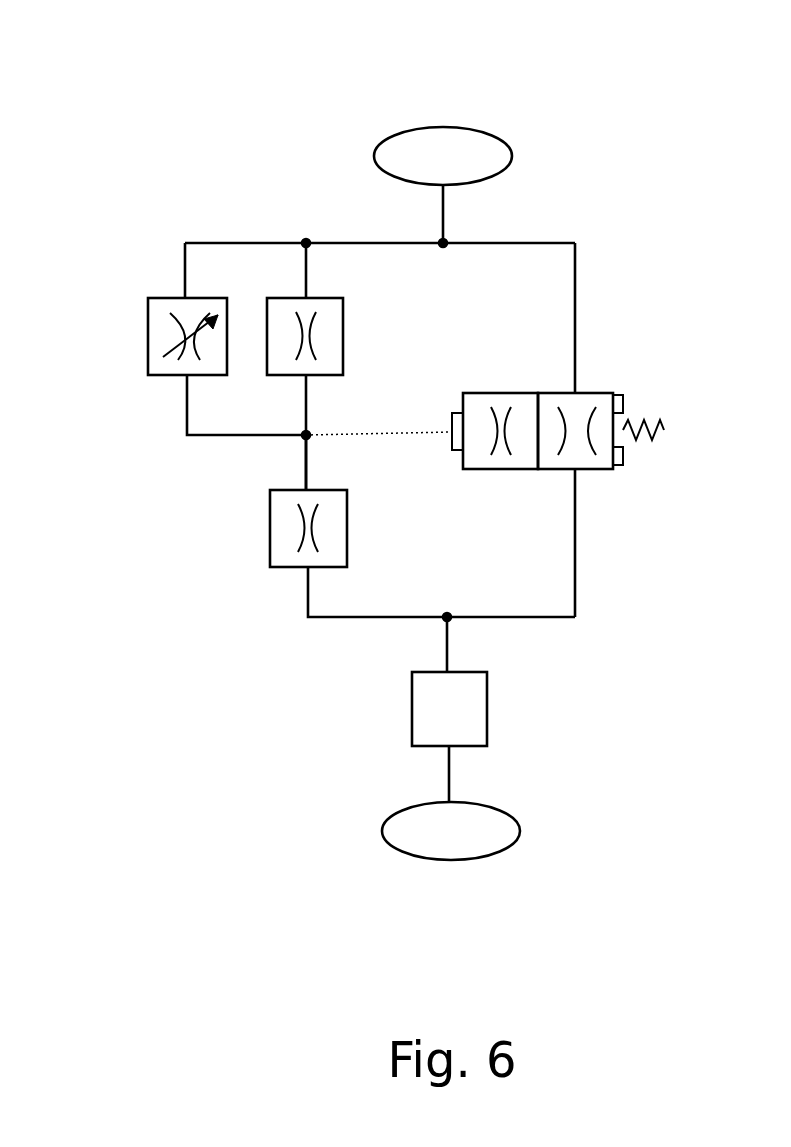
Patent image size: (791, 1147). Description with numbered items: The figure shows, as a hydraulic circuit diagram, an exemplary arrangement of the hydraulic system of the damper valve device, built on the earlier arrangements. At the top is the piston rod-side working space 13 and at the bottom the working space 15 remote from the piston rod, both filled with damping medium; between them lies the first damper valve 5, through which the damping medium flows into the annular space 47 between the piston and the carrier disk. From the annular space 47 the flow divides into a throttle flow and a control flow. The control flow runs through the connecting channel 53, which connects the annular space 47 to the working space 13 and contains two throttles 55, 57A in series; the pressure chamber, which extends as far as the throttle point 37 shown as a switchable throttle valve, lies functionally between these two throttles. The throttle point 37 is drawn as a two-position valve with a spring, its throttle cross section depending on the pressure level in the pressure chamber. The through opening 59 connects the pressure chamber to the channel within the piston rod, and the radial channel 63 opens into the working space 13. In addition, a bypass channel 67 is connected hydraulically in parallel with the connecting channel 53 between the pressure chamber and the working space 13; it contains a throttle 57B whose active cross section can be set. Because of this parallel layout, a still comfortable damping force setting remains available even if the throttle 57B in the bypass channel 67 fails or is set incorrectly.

The piston rod-side working space 13 is at (452, 172).
The working space remote from the piston rod 15 is at (490, 857).
The first damper valve 5 is at (470, 718).
The throttle point 37 is at (606, 473).
The annular space 47 is at (455, 620).
The connecting channel 53 is at (305, 470).
The throttle 55 is at (283, 535).
The throttle 57A is at (283, 295).
The throttle 57B is at (165, 295).
The through opening 59 is at (300, 437).
The radial channel 63 is at (334, 240).
The bypass channel 67 is at (185, 398).